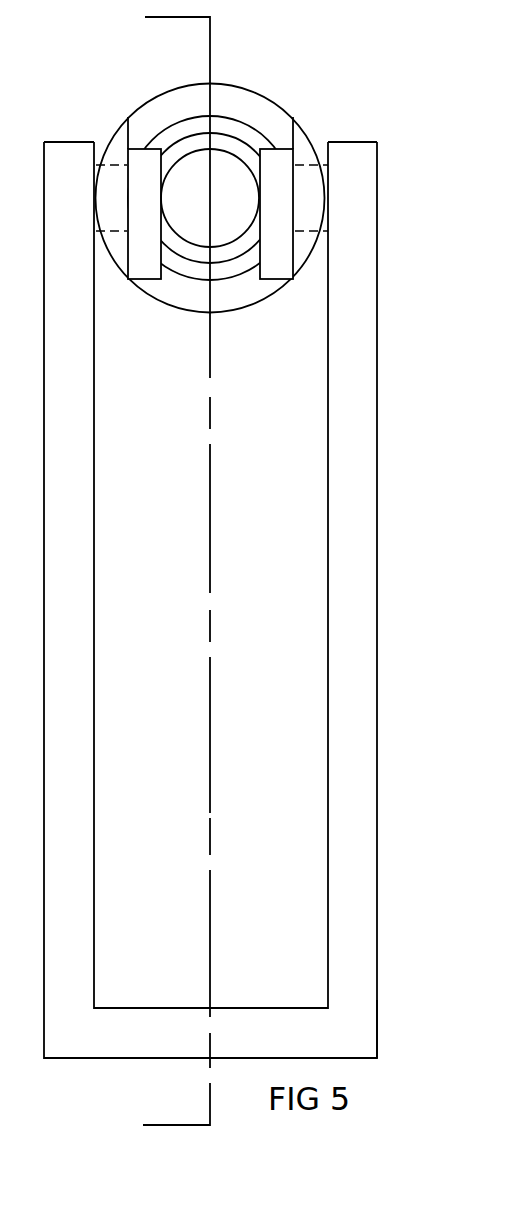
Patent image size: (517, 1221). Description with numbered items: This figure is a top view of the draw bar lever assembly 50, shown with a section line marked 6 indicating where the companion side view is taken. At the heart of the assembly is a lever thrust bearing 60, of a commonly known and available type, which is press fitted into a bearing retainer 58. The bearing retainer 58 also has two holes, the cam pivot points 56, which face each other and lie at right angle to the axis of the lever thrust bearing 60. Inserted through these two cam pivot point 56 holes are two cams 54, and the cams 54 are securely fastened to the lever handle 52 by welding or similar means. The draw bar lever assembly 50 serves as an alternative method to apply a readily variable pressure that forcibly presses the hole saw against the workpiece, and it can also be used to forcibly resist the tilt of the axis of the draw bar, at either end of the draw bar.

The section line 6- 6 is at (166, 572).
The draw bar lever assembly 50 is at (397, 1005).
The lever handle 52 is at (78, 410).
The cam 54 is at (281, 329).
The cam pivot point 56 is at (208, 568).
The bearing retainer 58 is at (278, 116).
The lever thrust bearing 60 is at (212, 179).